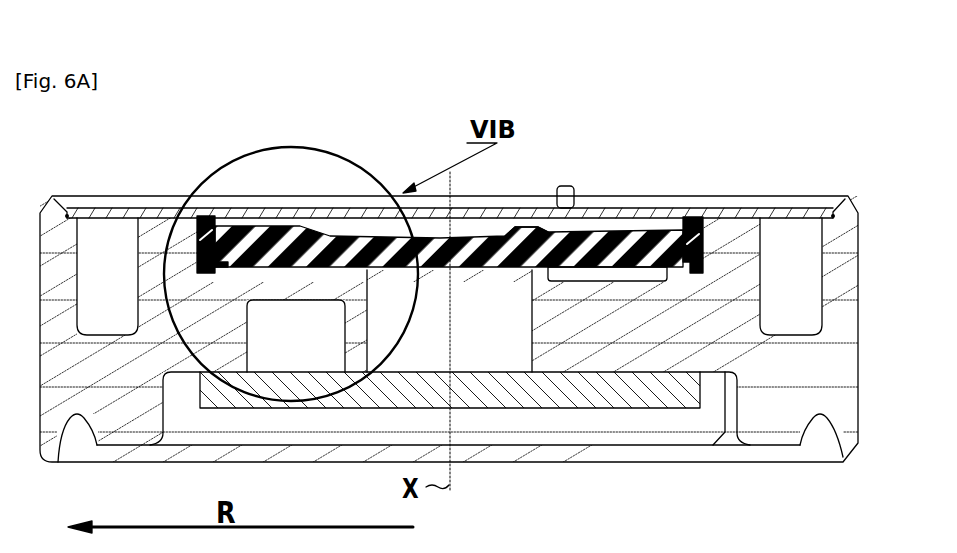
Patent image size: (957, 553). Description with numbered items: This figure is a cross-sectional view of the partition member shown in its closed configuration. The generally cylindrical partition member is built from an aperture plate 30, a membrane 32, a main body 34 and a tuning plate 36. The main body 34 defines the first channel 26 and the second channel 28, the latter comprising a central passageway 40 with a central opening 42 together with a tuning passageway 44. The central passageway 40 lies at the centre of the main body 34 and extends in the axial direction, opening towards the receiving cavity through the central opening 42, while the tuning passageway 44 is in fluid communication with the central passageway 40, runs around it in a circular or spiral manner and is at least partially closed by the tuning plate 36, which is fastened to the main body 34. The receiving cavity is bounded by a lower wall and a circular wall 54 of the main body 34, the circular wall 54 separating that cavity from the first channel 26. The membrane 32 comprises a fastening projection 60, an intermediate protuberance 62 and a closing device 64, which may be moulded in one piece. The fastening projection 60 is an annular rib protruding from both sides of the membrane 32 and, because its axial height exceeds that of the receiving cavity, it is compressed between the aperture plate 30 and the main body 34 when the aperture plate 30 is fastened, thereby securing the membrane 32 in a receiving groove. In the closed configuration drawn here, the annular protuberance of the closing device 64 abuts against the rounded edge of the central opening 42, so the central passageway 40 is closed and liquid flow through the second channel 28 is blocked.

The first channel 26 is at (107, 273).
The second channel 28 is at (493, 350).
The aperture plate 30 is at (717, 218).
The membrane 32 is at (637, 230).
The main body 34 is at (847, 368).
The tuning plate 36 is at (270, 385).
The central passageway 40 is at (466, 384).
The central opening 42 is at (463, 263).
The tuning passageway 44 is at (298, 360).
The circular wall 54 is at (155, 242).
The fastening projection 60 is at (207, 218).
The intermediate protuberance 62 is at (440, 193).
The closing device 64 is at (530, 230).